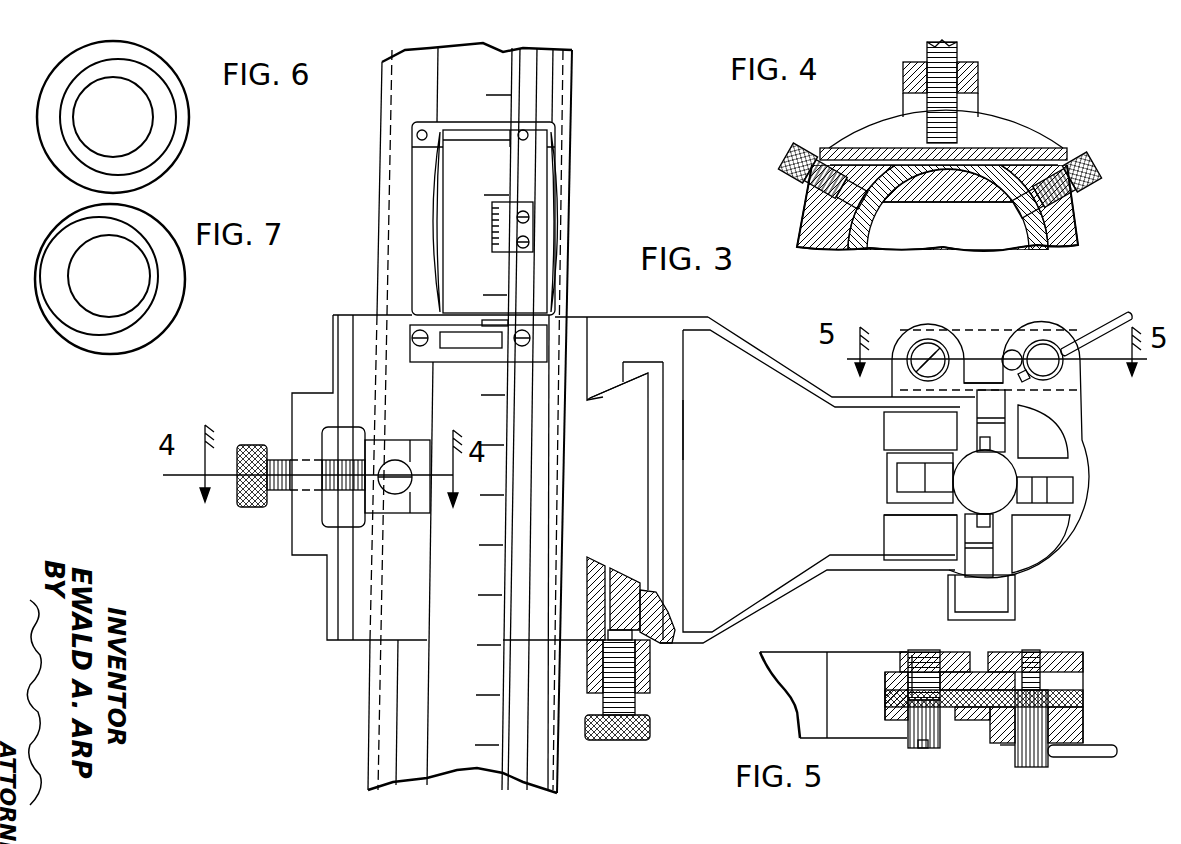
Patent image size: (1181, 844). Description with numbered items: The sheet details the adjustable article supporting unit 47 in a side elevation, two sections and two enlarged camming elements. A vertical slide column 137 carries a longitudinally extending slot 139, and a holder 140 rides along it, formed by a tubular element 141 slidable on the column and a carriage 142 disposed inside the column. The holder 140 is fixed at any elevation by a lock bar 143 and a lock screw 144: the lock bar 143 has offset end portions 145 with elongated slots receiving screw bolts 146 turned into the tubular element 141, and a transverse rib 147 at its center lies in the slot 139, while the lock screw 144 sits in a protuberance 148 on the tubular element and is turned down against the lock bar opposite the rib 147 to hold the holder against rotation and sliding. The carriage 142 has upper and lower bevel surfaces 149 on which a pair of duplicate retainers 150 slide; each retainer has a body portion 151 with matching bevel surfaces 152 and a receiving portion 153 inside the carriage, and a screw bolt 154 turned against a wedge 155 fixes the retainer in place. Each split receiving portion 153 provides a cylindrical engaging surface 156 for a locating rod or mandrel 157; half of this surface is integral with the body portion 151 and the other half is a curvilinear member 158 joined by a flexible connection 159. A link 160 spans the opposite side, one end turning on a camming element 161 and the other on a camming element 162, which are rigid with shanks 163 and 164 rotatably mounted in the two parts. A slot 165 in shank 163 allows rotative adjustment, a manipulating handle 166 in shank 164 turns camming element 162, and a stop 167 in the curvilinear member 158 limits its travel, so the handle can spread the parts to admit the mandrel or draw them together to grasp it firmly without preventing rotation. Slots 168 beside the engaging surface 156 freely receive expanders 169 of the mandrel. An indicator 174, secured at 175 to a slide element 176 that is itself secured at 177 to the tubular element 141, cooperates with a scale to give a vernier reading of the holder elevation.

In FIG. 3, the adjustable article supporting unit 47 is at (598, 232).
In FIG. 3, the vertical slide column 137 is at (563, 108).
In FIG. 4, the longitudinally extending slot 139 is at (950, 175).
In FIG. 3, the holder 140 is at (348, 628).
In FIG. 3, the tubular element 141 is at (348, 330).
In FIG. 4, the tubular element 141 is at (1065, 238).
In FIG. 3, the carriage 142 is at (625, 478).
In FIG. 4, the lock bar 143 is at (1010, 152).
In FIG. 3, the lock screw 144 is at (252, 445).
In FIG. 4, the lock screw 144 is at (948, 57).
In FIG. 3, the offset end portions 145 is at (403, 447).
In FIG. 4, the offset end portions 145 is at (835, 141).
In FIG. 3, the screw bolts 146 is at (397, 495).
In FIG. 4, the screw bolts 146 is at (784, 160).
In FIG. 4, the transverse rib 147 is at (940, 168).
In FIG. 4, the protuberance 148 is at (975, 80).
In FIG. 3, the oblique or bevel surfaces 149 is at (610, 395).
In FIG. 3, the retainers 150 is at (700, 318).
In FIG. 3, the body portion 151 is at (683, 427).
In FIG. 3, the oblique or bevel surfaces 152 is at (598, 398).
In FIG. 3, the locating rod or mandrel receiving portion 153 is at (940, 540).
In FIG. 3, the screw bolt 154 is at (637, 733).
In FIG. 3, the wedge 155 is at (630, 610).
In FIG. 3, the cylindrical engaging surface 156 is at (968, 463).
In FIG. 3, the locating rod or mandrel 157 is at (975, 490).
In FIG. 3, the curvilinear member 158 is at (1078, 497).
In FIG. 5, the curvilinear member 158 is at (1062, 680).
In FIG. 3, the flexible connection 159 is at (985, 580).
In FIG. 3, the link 160 is at (985, 335).
In FIG. 5, the link 160 is at (980, 705).
In FIG. 5, the camming element 161 is at (912, 698).
In FIG. 7, the camming element 161 is at (95, 330).
In FIG. 5, the camming element 162 is at (1037, 698).
In FIG. 6, the camming element 162 is at (167, 117).
In FIG. 3, the shank 163 is at (920, 345).
In FIG. 5, the shank 163 is at (920, 733).
In FIG. 7, the shank 163 is at (186, 325).
In FIG. 3, the shank 164 is at (1046, 348).
In FIG. 5, the shank 164 is at (1035, 748).
In FIG. 6, the shank 164 is at (203, 137).
In FIG. 3, the slot 165 is at (930, 355).
In FIG. 5, the slot 165 is at (921, 750).
In FIG. 3, the manipulating handle 166 is at (1108, 322).
In FIG. 5, the manipulating handle 166 is at (1100, 750).
In FIG. 3, the stop 167 is at (1002, 358).
In FIG. 5, the stop 167 is at (1003, 745).
In FIG. 3, the slots 168 is at (925, 485).
In FIG. 3, the expanders 169 is at (990, 446).
In FIG. 3, the indicator 174 is at (493, 226).
In FIG. 3, the securing means 175 is at (529, 244).
In FIG. 3, the slide element 176 is at (550, 318).
In FIG. 3, the securing means 177 is at (520, 378).